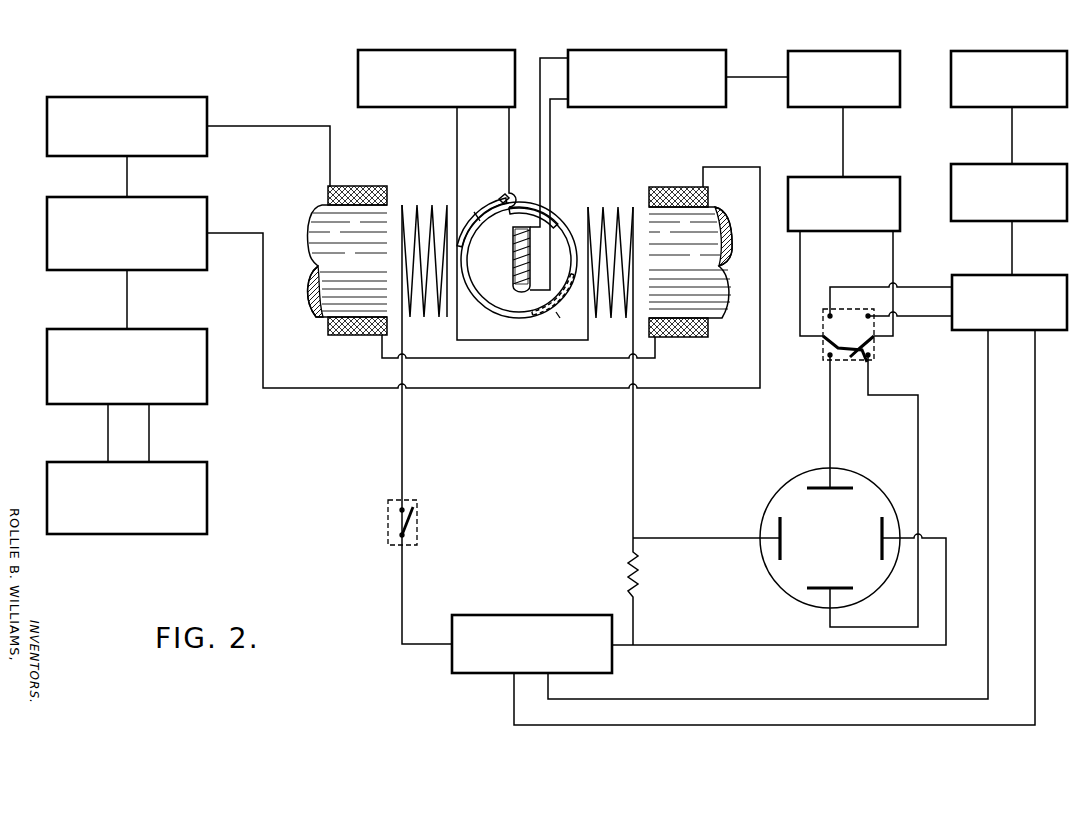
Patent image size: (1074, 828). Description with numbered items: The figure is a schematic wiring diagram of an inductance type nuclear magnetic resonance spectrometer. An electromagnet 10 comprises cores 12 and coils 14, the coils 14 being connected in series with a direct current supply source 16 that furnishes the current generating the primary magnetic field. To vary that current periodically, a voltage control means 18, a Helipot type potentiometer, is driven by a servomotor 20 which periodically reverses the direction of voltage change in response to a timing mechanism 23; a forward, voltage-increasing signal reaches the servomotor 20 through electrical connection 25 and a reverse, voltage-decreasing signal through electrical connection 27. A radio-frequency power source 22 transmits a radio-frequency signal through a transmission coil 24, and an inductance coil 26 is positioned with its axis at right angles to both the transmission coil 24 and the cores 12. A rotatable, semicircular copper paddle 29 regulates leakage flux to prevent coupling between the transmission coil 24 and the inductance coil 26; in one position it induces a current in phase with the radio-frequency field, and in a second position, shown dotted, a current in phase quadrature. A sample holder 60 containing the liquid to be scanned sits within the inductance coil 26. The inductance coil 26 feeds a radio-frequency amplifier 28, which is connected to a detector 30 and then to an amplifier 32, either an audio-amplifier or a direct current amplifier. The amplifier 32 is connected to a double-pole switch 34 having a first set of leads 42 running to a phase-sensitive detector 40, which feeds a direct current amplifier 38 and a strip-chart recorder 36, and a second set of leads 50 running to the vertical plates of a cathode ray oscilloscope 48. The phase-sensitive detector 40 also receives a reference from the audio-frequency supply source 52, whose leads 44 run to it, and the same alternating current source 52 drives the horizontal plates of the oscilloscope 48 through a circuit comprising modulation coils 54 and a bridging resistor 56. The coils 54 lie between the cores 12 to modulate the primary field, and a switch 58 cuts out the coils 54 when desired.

The electromagnet 10 is at (279, 94).
The cores 12 is at (360, 266).
The coils 14 is at (362, 188).
The direct current supply source 16 is at (86, 102).
The voltage control means 18 is at (47, 233).
The servomotor 20 is at (47, 355).
The radio-frequency power source 22 is at (463, 53).
The timing mechanism 23 is at (203, 485).
The transmission coil 24 is at (493, 312).
The electrical connection 25 is at (149, 433).
The inductance coil 26 is at (513, 283).
The electrical connection 27 is at (108, 433).
The radio-frequency amplifier 28 is at (666, 53).
The paddle 29 is at (500, 197).
The detector 30 is at (853, 55).
The amplifier 32 is at (878, 180).
The double-pole switch 34 is at (826, 348).
The strip-chart recorder 36 is at (1016, 55).
The direct current amplifier 38 is at (969, 168).
The phase-sensitive detector 40 is at (971, 278).
The leads 42 is at (921, 287).
The reference signal leads 44 is at (789, 699).
The cathode ray oscilloscope 48 is at (776, 494).
The leads 50 is at (830, 380).
The audio-frequency reference voltage supply source 52 is at (525, 615).
The coils 54 is at (417, 205).
The bridging resistor 56 is at (640, 578).
The switch 58 is at (418, 510).
The sample holder 60 is at (513, 250).